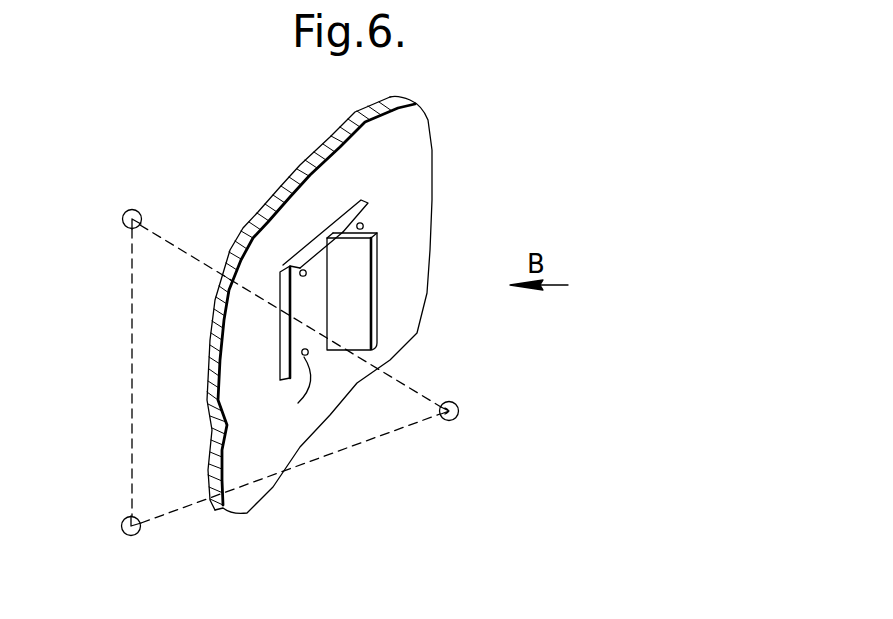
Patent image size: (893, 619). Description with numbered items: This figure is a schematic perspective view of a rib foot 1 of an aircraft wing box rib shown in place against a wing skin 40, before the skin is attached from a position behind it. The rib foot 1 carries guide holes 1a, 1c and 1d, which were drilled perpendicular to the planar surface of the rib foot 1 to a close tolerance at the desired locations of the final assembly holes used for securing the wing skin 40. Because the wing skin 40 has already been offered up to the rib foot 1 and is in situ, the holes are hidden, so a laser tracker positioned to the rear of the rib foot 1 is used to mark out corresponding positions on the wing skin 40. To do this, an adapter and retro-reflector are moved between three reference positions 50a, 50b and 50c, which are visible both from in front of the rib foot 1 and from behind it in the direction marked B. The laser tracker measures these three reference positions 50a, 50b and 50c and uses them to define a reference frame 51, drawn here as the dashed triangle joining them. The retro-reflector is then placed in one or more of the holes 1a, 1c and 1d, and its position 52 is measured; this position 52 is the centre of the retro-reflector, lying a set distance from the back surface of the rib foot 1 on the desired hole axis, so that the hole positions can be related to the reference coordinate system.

The rib foot 1 is at (363, 190).
The guide hole 1a is at (302, 354).
The guide hole 1c is at (301, 270).
The guide hole 1d is at (364, 226).
The wing skin 40 is at (298, 477).
The reference position 50a is at (123, 227).
The reference position 50b is at (123, 518).
The reference position 50c is at (453, 420).
The reference frame 51 is at (358, 445).
The position 52 is at (292, 397).